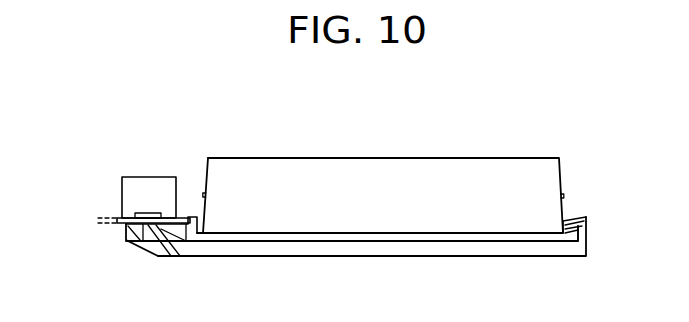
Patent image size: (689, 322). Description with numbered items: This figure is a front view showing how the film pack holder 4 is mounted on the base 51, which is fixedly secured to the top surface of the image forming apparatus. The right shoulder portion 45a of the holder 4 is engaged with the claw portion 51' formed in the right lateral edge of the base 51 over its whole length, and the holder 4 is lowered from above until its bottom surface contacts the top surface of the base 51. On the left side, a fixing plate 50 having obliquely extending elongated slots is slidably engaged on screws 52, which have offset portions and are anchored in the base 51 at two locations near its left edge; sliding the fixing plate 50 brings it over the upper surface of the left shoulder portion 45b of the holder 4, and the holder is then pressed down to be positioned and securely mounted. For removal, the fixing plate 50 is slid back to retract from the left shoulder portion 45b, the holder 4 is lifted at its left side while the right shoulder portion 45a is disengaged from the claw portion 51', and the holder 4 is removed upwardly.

The film pack holder 4 is at (523, 159).
The fixing plate 50 is at (128, 217).
The screw 52 is at (147, 210).
The base 51 is at (356, 262).
The claw portion 51' is at (609, 208).
The right shoulder portion 45a is at (567, 235).
The left shoulder portion 45b is at (193, 233).